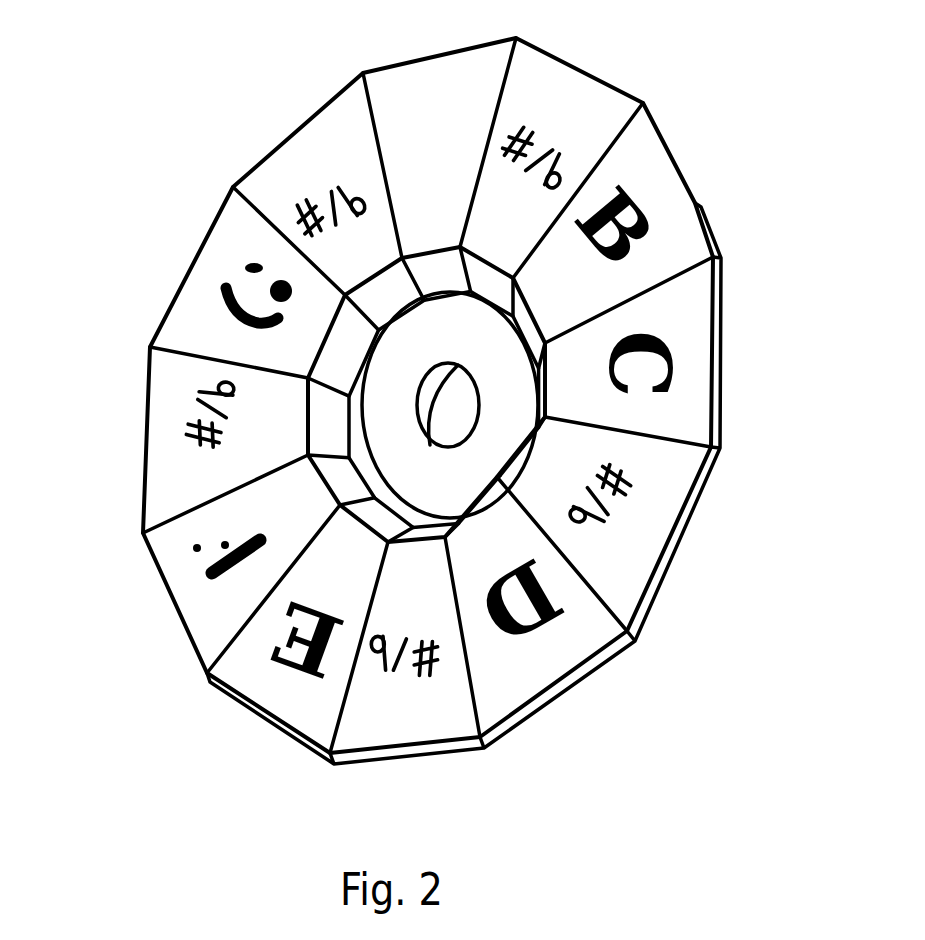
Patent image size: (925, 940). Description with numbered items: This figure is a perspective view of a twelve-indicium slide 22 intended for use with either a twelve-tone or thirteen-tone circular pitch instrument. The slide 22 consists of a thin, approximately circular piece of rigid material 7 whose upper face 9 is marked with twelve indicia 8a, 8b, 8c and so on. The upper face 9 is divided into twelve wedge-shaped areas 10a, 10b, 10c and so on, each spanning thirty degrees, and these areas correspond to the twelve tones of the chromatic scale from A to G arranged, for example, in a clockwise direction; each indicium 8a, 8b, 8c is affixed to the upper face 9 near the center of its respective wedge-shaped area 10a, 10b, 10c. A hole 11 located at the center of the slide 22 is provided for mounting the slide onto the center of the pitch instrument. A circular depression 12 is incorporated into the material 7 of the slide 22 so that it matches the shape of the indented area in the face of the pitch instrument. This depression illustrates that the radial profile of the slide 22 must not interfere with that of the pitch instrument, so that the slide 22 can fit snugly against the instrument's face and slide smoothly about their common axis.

The twelve-indicium slide 22 is at (727, 100).
The rigid material 7 is at (697, 208).
The upper face 9 is at (640, 163).
The hole 11 is at (450, 410).
The circular depression 12 is at (397, 453).
The indicium 8a is at (227, 297).
The indicium 8b is at (312, 237).
The indicium 8c is at (420, 116).
The wedge-shaped area 10a is at (267, 341).
The wedge-shaped area 10b is at (310, 233).
The wedge-shaped area 10c is at (410, 182).